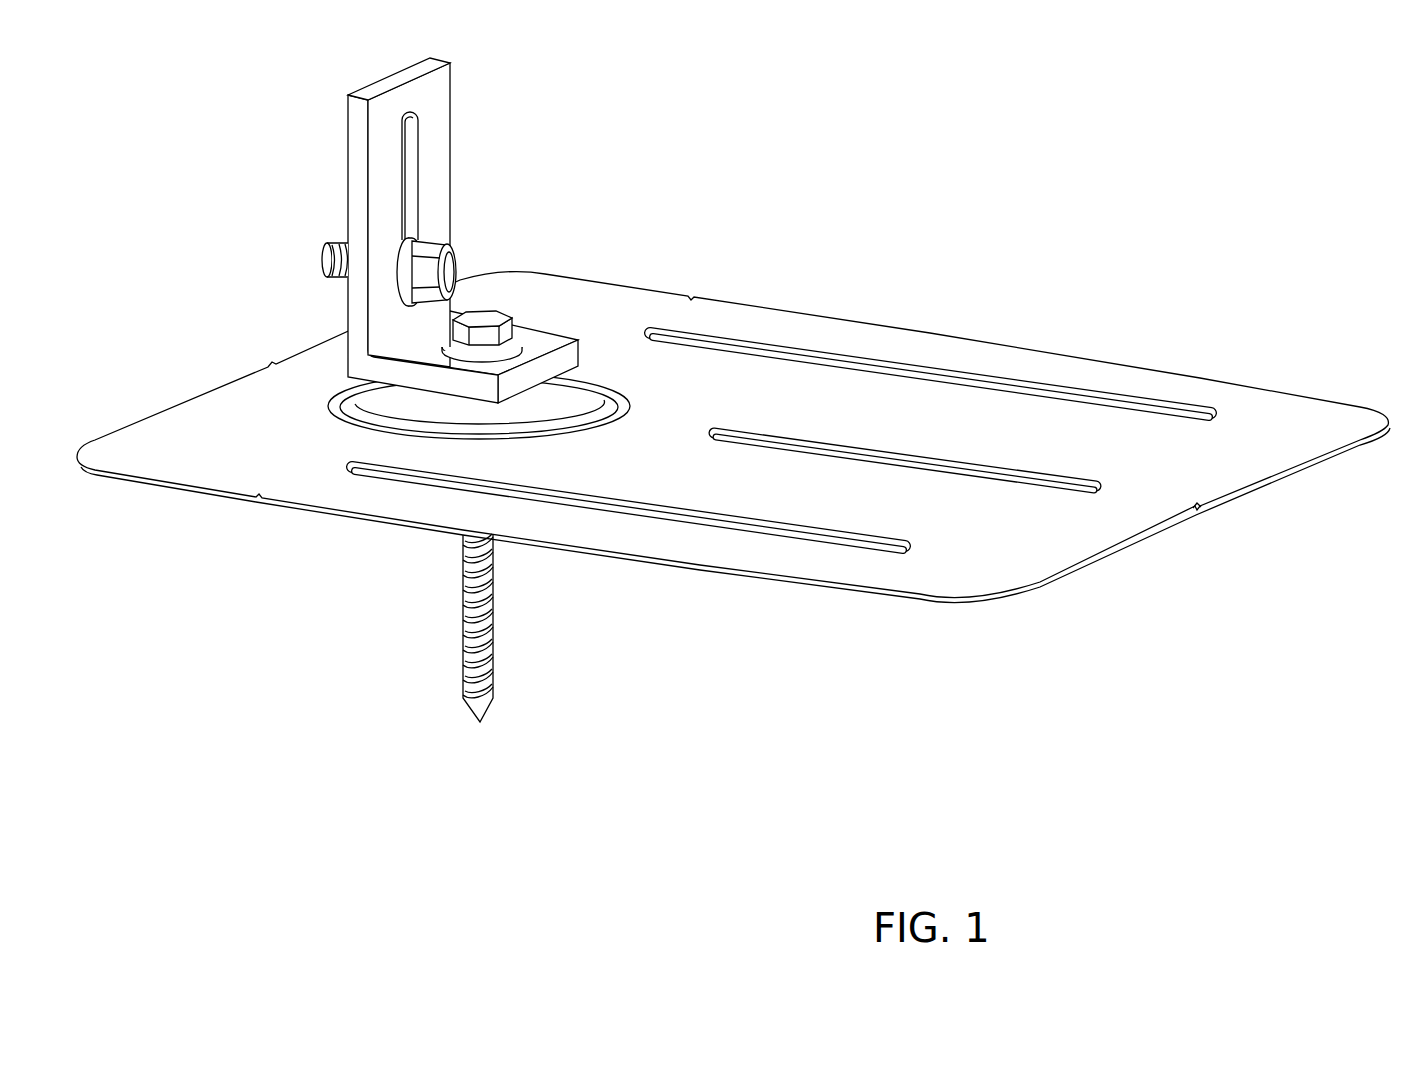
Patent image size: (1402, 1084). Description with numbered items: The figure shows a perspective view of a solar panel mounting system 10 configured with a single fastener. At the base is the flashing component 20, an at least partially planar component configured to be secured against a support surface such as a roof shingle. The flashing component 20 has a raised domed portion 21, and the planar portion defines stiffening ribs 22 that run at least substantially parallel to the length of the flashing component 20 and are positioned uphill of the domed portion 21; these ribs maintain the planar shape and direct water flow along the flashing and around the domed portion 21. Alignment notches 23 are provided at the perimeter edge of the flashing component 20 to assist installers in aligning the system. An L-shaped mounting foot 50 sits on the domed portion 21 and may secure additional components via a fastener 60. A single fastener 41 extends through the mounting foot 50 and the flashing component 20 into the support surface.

The mounting system 10 is at (1060, 105).
The flashing component 20 is at (1010, 568).
The domed portion 21 is at (600, 365).
The stiffening ribs 22 is at (1068, 383).
The alignment notches 23 is at (1203, 510).
The fastener 41 is at (487, 716).
The L-shaped mounting foot 50 is at (433, 104).
The fastener 60 is at (320, 252).